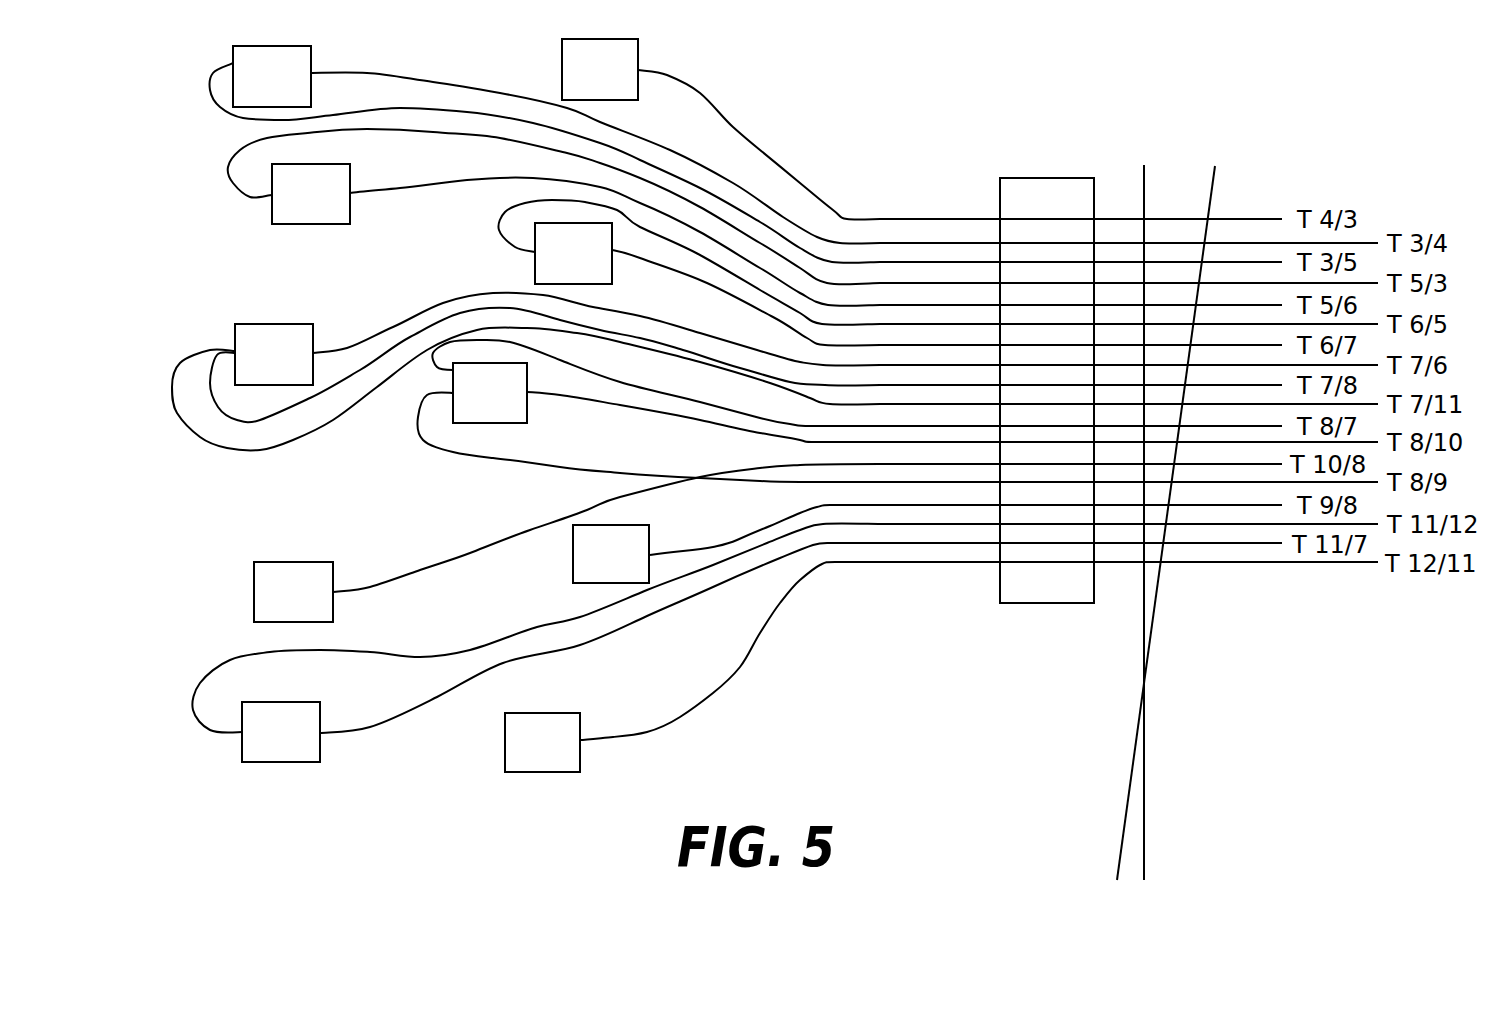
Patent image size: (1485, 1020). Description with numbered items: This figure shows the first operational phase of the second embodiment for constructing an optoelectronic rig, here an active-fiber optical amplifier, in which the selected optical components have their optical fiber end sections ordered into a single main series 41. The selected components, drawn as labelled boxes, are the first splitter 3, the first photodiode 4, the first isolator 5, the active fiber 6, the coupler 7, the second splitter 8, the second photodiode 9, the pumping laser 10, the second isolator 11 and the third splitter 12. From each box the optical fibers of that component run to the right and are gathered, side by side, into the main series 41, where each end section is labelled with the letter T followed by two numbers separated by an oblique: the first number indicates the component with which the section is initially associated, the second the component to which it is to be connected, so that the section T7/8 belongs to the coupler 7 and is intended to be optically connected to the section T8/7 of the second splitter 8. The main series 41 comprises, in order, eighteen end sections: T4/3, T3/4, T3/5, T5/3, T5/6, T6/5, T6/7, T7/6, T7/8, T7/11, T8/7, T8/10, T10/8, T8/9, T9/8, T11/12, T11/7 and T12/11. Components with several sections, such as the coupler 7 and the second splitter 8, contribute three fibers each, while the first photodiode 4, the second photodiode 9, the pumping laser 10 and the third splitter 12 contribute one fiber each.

The first splitter 3 is at (272, 76).
The first photodiode 4 is at (600, 69).
The first isolator 5 is at (311, 194).
The active fiber 6 is at (573, 253).
The coupler 7 is at (274, 354).
The second splitter 8 is at (490, 393).
The second photodiode 9 is at (611, 554).
The pumping laser 10 is at (293, 592).
The second isolator 11 is at (281, 732).
The third splitter 12 is at (542, 742).
The main series 41 is at (1122, 190).